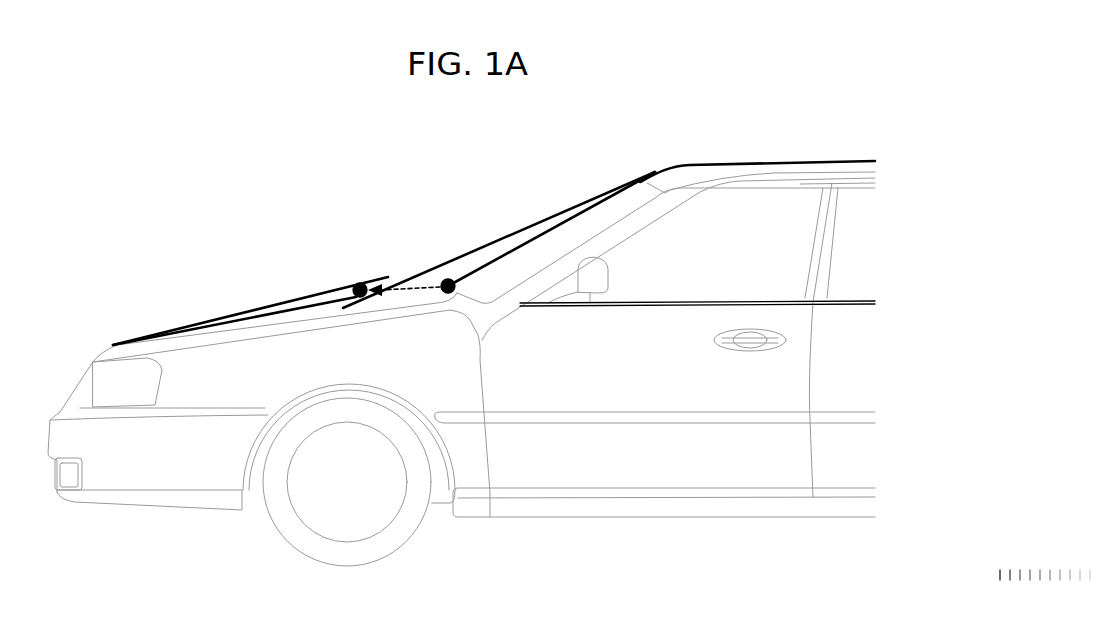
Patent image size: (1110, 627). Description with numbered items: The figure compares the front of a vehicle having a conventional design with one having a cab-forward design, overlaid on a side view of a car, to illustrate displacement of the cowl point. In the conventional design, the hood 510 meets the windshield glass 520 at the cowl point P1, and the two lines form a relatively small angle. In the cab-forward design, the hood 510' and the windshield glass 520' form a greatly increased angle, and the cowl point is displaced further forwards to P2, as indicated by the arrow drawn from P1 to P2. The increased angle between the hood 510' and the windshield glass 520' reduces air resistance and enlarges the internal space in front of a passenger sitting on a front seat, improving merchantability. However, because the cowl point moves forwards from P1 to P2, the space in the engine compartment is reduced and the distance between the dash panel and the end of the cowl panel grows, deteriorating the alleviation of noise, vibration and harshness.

The hood 510 is at (234, 265).
The hood 510' is at (250, 290).
The windshield glass 520 is at (546, 229).
The windshield glass 520' is at (499, 224).
The cowl point P1 is at (446, 280).
The cowl point P2 is at (360, 283).